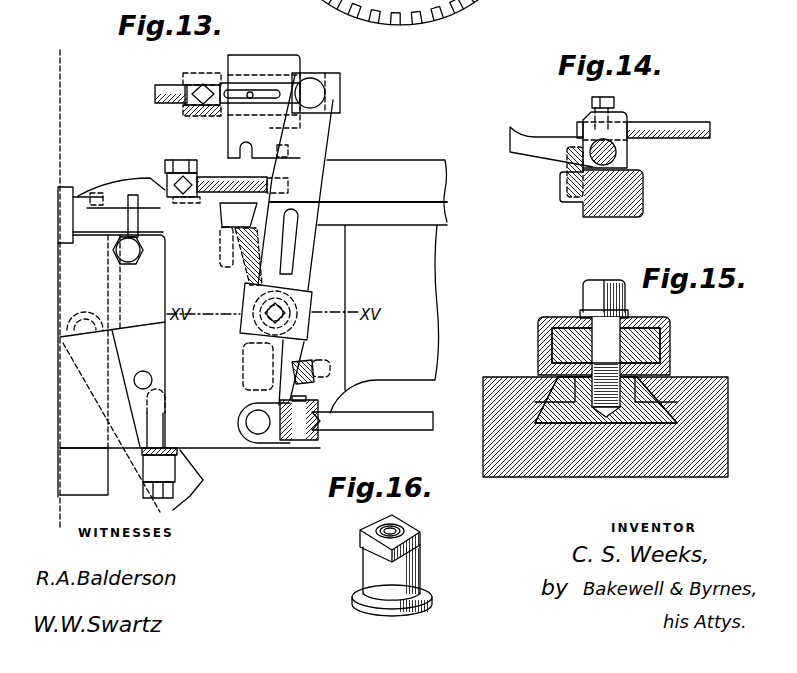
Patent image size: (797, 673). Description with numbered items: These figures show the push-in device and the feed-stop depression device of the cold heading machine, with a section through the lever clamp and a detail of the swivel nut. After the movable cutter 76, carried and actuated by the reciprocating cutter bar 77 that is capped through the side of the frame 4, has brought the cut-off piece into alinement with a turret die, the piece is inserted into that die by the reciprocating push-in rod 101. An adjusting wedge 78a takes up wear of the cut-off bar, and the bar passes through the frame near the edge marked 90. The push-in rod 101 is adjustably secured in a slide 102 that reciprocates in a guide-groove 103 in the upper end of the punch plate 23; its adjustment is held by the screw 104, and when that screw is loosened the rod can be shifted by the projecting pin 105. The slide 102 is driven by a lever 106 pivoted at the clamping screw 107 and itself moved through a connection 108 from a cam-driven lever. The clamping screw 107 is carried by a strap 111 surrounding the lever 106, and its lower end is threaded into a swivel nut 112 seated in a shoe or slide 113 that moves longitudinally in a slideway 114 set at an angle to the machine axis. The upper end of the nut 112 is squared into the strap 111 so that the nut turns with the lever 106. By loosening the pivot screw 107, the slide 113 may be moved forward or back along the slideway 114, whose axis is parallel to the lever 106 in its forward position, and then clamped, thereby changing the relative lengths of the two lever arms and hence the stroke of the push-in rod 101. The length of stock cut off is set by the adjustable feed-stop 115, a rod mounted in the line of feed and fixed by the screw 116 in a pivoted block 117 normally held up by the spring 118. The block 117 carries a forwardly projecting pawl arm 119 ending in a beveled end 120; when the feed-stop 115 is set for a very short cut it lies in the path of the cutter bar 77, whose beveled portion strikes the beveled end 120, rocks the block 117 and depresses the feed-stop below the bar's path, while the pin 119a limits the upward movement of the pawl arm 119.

In FIG. 15, the frame 4 is at (714, 457).
In FIG. 13, the punch plate 23 is at (280, 62).
In FIG. 13, the movable cutter 76 is at (64, 200).
In FIG. 13, the cutter bar 77 is at (84, 471).
In FIG. 13, the adjusting wedge 78a is at (163, 512).
In FIG. 13, the frame edge 90 is at (200, 478).
In FIG. 13, the push-in rod 101 is at (157, 92).
In FIG. 13, the slide 102 is at (318, 82).
In FIG. 13, the guide-groove 103 is at (252, 128).
In FIG. 13, the screw 104 is at (200, 84).
In FIG. 13, the projecting pin 105 is at (251, 90).
In FIG. 13, the lever 106 is at (318, 156).
In FIG. 15, the lever 106 is at (652, 336).
In FIG. 13, the clamping screw 107 is at (283, 306).
In FIG. 15, the clamping screw 107 is at (610, 340).
In FIG. 13, the connection 108 is at (386, 420).
In FIG. 13, the strap 111 is at (296, 333).
In FIG. 15, the strap 111 is at (543, 343).
In FIG. 15, the swivel nut 112 is at (586, 425).
In FIG. 16, the swivel nut 112 is at (423, 548).
In FIG. 13, the shoe or slide 113 is at (302, 355).
In FIG. 15, the shoe or slide 113 is at (658, 420).
In FIG. 13, the slideway 114 is at (250, 268).
In FIG. 15, the slideway 114 is at (672, 405).
In FIG. 13, the adjustable feed-stop 115 is at (163, 180).
In FIG. 14, the adjustable feed-stop 115 is at (646, 130).
In FIG. 13, the screw 116 is at (182, 183).
In FIG. 14, the screw 116 is at (609, 108).
In FIG. 13, the pivoted block 117 is at (200, 180).
In FIG. 14, the pivoted block 117 is at (620, 151).
In FIG. 14, the spring 118 is at (568, 169).
In FIG. 13, the pawl arm 119 is at (110, 200).
In FIG. 14, the pawl arm 119 is at (558, 136).
In FIG. 13, the pin or stop 119a is at (140, 218).
In FIG. 14, the beveled end 120 is at (518, 128).